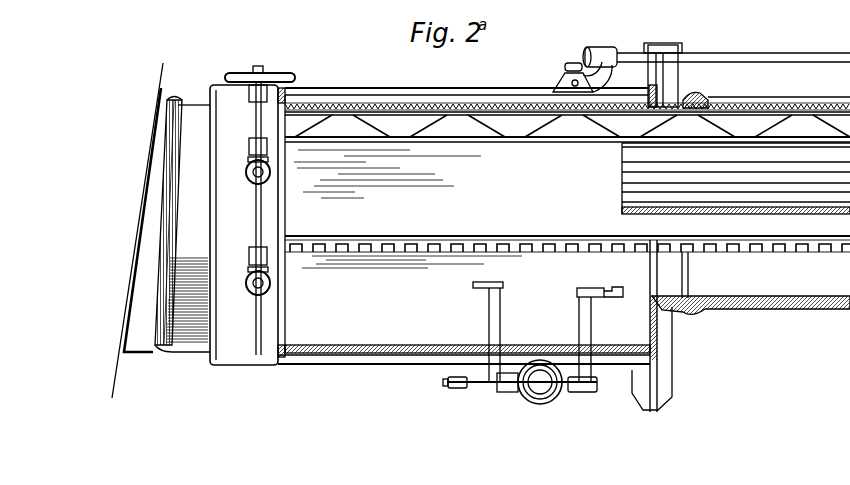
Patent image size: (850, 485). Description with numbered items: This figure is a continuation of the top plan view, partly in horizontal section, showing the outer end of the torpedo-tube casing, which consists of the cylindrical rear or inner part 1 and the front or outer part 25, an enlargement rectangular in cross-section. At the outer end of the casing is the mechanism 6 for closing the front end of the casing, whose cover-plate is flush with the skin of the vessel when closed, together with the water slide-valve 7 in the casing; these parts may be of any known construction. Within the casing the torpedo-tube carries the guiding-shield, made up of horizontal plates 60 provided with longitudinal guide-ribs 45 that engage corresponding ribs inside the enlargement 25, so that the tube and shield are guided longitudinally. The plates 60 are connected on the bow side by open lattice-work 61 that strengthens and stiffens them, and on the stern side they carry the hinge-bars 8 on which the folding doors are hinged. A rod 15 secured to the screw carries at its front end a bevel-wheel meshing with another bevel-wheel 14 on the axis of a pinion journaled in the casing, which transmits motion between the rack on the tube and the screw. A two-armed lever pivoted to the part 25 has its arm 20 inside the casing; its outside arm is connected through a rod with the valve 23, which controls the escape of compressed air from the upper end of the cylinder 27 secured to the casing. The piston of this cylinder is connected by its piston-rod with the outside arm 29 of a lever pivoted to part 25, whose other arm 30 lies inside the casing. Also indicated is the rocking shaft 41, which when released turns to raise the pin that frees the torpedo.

The rear or inner part of torpedo-tube casing 1 is at (820, 298).
The mechanism for closing the outer end of the casing 6 is at (161, 230).
The water slide-valve 7 is at (252, 215).
The hinge-bar 8 is at (745, 253).
The bevel-wheel 14 is at (571, 67).
The rod 15 is at (778, 61).
The arm of two-armed lever 20 is at (476, 289).
The valve 23 is at (500, 387).
The front or outer part of torpedo-tube casing 25 is at (402, 106).
The cylinder 27 is at (528, 398).
The outside arm of lever 29 is at (569, 387).
The inside arm of lever 30 is at (607, 294).
The rocking shaft 41 is at (473, 385).
The guide-ribs 45 is at (680, 162).
The horizontal plates 60 is at (567, 234).
The lattice-work 61 is at (534, 136).